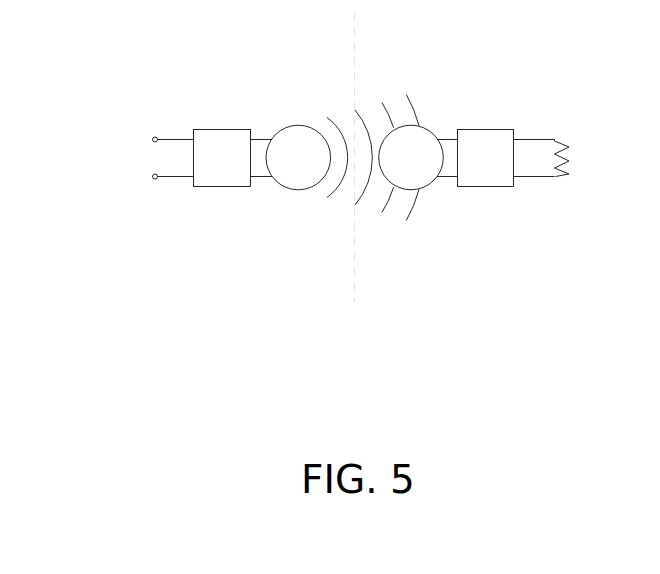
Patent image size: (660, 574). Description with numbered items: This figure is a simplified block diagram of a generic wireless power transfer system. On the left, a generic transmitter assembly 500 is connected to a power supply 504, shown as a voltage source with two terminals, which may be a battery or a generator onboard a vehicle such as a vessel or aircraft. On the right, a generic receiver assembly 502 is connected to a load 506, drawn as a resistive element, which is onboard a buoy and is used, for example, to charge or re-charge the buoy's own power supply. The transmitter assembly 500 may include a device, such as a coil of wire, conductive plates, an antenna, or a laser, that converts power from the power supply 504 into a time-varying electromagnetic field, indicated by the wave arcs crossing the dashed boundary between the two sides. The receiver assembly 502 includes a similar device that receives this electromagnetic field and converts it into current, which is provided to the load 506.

The transmitter assembly 500 is at (245, 95).
The receiver assembly 502 is at (462, 93).
The power supply 504 is at (153, 179).
The load 506 is at (555, 177).